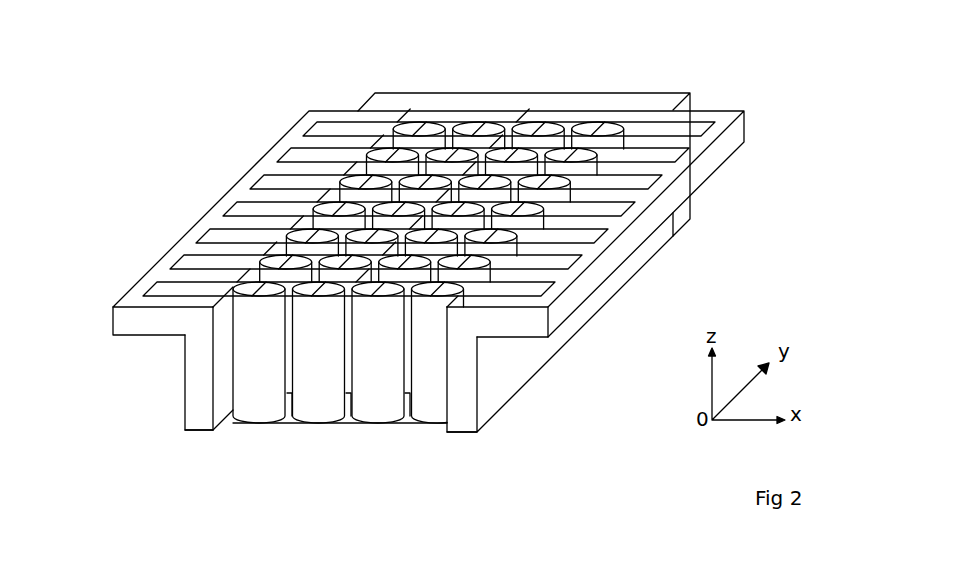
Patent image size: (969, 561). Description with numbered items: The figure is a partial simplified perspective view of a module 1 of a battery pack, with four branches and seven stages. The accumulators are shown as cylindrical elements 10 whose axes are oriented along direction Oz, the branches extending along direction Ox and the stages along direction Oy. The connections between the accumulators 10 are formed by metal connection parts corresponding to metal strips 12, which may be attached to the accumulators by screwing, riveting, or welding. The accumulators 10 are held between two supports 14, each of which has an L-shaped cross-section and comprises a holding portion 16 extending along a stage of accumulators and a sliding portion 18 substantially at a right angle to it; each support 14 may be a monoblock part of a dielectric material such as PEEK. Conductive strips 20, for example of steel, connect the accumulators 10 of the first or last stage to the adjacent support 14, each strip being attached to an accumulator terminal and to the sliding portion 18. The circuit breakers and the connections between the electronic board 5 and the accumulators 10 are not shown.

The module 1 is at (784, 136).
The electronic board 5 is at (537, 104).
The accumulators 10 is at (246, 412).
The metal strips 12 is at (296, 417).
The supports 14 is at (529, 380).
The holding portion 16 is at (463, 383).
The sliding portion 18 is at (514, 334).
The conductive strips 20 is at (528, 291).